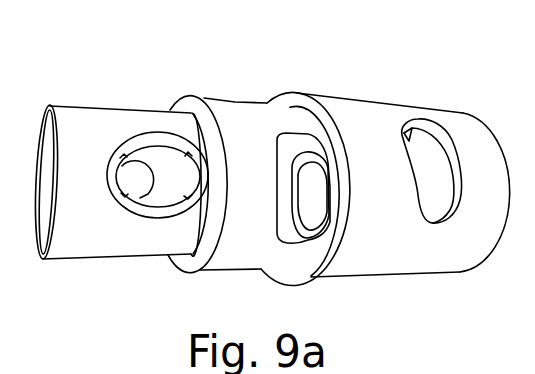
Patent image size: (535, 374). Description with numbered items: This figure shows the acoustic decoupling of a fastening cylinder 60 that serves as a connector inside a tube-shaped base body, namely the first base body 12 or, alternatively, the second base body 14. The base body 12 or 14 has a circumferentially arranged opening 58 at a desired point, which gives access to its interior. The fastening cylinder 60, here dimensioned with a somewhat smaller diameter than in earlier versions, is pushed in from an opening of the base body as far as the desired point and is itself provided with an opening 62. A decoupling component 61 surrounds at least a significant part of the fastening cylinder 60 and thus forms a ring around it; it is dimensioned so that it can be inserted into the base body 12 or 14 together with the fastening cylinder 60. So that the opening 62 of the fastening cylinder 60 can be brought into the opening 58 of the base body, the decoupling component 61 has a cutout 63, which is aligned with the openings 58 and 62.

The first base body 12 is at (355, 181).
The second base body 14 is at (372, 118).
The opening 58 is at (433, 193).
The fastening cylinder 60 is at (120, 180).
The decoupling component 61 is at (227, 113).
The opening 62 is at (140, 198).
The cutout 63 is at (297, 153).